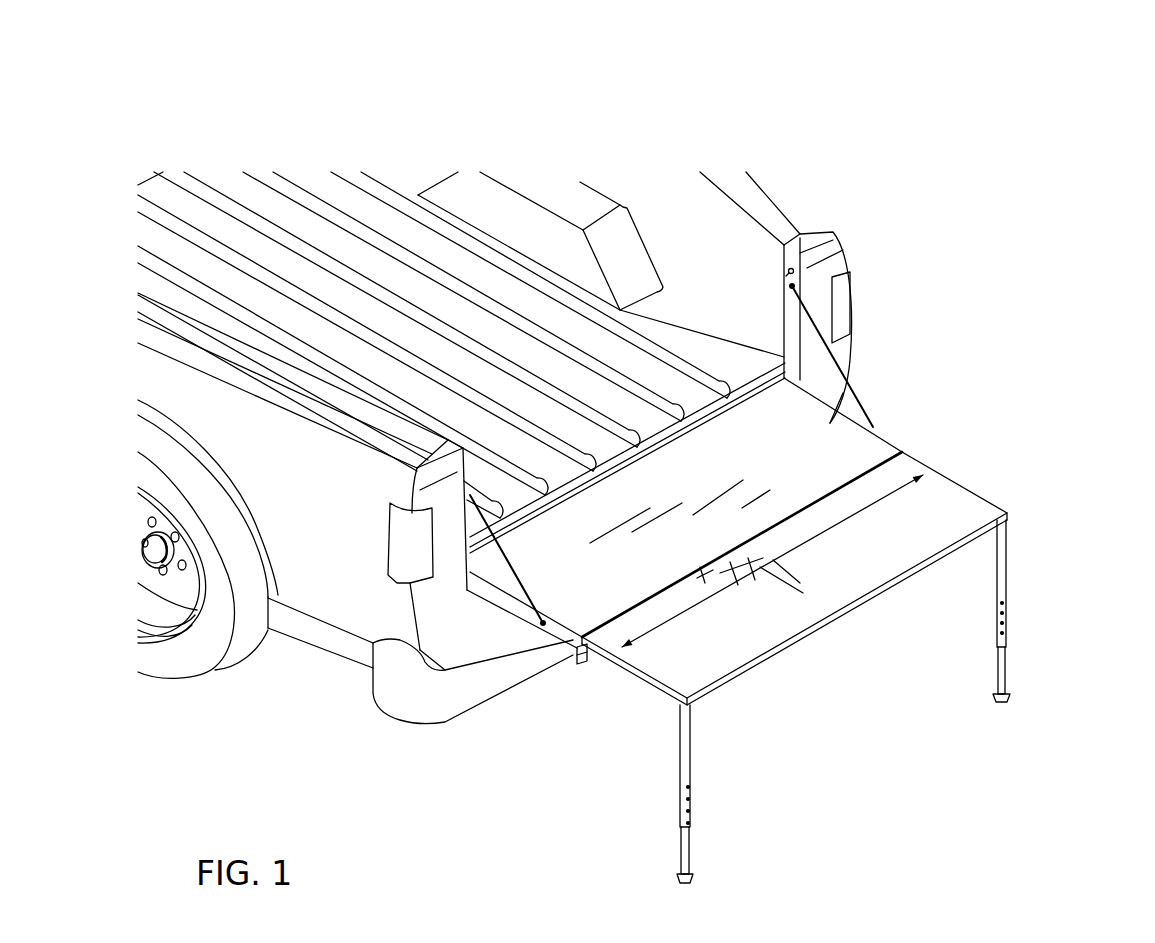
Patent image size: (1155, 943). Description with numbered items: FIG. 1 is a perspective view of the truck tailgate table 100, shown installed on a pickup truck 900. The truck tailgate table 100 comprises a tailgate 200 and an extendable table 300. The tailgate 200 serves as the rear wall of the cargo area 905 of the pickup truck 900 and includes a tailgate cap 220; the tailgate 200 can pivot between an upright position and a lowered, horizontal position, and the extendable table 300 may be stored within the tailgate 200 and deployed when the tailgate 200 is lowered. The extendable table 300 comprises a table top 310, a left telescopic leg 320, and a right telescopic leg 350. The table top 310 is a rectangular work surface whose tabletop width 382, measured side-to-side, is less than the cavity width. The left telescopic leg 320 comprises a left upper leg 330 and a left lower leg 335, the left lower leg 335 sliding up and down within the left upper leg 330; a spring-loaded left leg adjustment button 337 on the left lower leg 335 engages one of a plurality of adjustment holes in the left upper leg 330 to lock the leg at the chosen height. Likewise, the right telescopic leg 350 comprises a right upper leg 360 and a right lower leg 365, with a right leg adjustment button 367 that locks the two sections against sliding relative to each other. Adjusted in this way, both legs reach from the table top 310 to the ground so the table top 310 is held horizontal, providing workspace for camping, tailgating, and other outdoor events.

The truck tailgate table 100 is at (988, 252).
The tailgate 200 is at (958, 392).
The tailgate cap 220 is at (580, 648).
The extendable table 300 is at (1125, 557).
The table top 310 is at (752, 632).
The left telescopic leg 320 is at (662, 712).
The left upper leg 330 is at (693, 735).
The left lower leg 335 is at (693, 857).
The left leg adjustment button 337 is at (693, 797).
The right telescopic leg 350 is at (983, 543).
The right upper leg 360 is at (1008, 563).
The right lower leg 365 is at (1008, 681).
The right leg adjustment button 367 is at (1008, 628).
The tabletop width 382 is at (835, 522).
The pickup truck 900 is at (328, 590).
The cargo area 905 is at (537, 357).